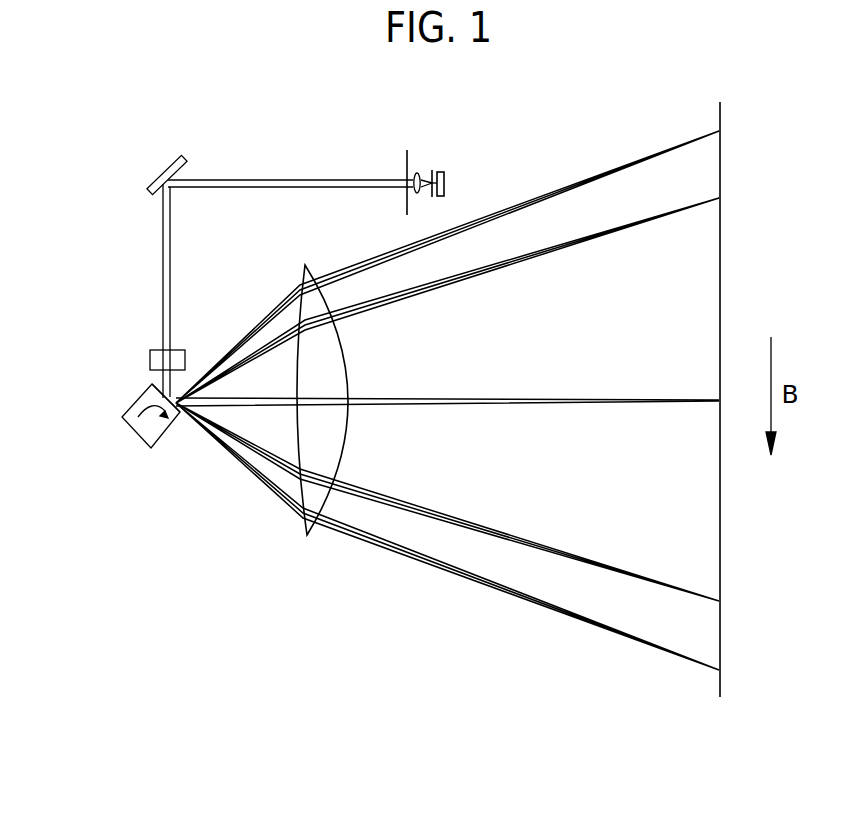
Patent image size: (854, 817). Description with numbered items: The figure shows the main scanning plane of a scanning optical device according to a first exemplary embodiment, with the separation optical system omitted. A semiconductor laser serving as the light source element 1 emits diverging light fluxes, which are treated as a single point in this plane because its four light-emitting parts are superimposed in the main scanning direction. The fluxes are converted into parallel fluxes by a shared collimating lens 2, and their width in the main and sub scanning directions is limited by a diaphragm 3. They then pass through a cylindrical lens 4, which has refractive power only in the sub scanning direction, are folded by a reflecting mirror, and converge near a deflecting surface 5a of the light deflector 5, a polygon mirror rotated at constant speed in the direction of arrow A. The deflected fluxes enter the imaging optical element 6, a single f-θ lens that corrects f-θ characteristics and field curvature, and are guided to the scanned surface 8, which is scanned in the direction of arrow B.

The light source element 1 is at (440, 170).
The collimating lens 2 is at (415, 173).
The diaphragm 3 is at (407, 150).
The cylindrical lens 4 is at (150, 360).
The light deflector 5 is at (127, 426).
The deflecting surface 5a is at (134, 449).
The imaging optical element 6 is at (308, 537).
The scanned surface 8 is at (721, 697).